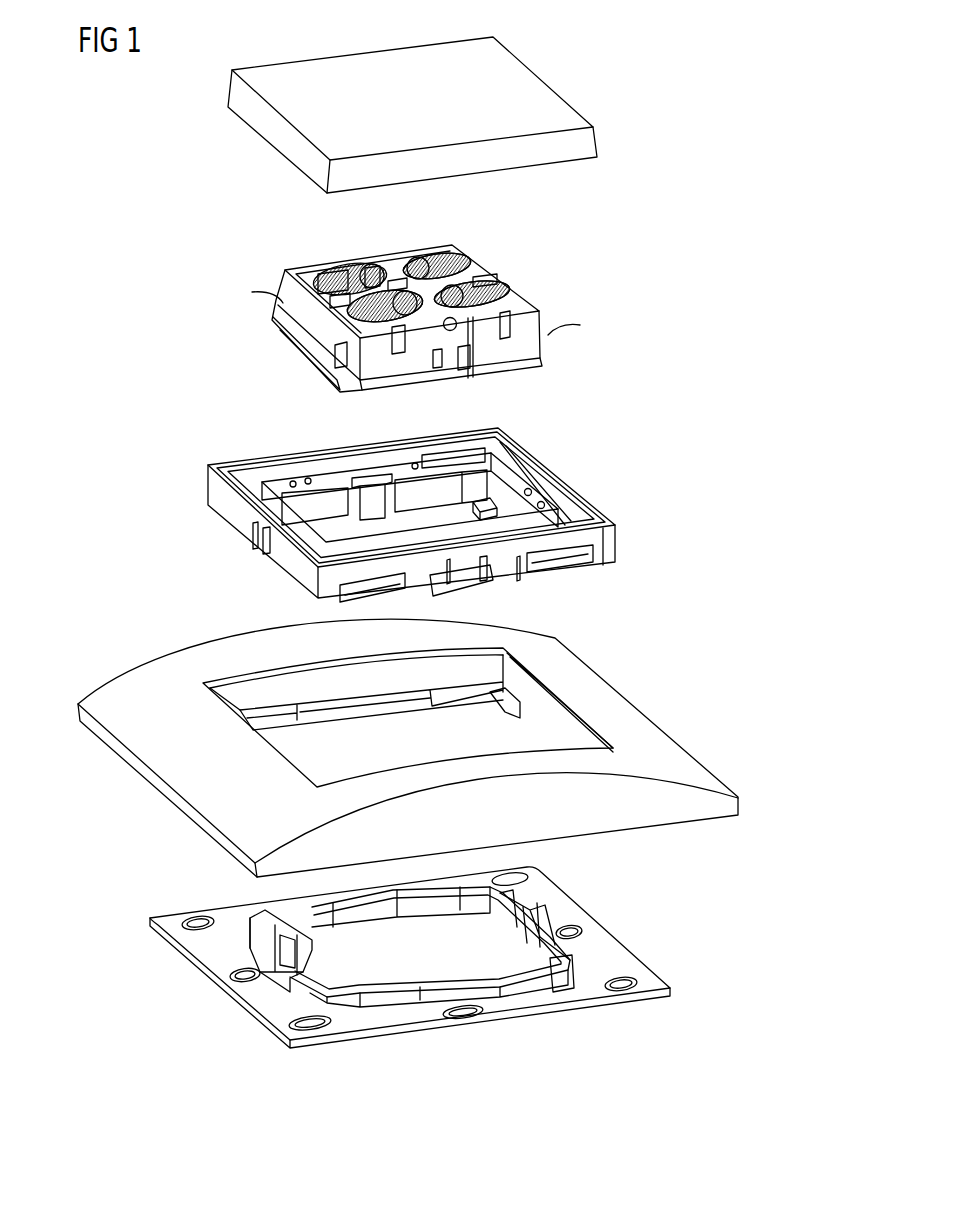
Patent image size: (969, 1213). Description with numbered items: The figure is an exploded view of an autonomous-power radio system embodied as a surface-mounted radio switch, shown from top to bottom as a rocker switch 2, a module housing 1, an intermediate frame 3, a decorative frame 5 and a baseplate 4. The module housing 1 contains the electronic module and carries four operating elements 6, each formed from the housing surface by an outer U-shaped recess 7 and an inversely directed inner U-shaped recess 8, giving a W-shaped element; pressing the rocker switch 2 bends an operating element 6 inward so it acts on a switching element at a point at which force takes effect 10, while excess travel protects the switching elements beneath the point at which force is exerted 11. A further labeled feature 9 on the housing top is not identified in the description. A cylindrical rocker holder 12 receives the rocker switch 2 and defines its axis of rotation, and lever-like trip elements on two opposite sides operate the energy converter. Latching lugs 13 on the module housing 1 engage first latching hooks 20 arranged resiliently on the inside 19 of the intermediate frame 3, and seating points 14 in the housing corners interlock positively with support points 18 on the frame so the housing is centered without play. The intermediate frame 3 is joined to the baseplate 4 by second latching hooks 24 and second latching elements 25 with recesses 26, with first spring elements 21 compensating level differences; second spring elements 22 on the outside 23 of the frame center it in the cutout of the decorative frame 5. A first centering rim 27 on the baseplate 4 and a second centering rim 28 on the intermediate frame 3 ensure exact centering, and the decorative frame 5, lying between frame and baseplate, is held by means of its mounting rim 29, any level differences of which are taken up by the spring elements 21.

The module housing 1 is at (415, 314).
The rocker switch 2 is at (545, 88).
The intermediate frame 3 is at (432, 516).
The baseplate 4 is at (410, 957).
The decorative frame 5 is at (408, 748).
The operating element 6 is at (363, 262).
The outer U-shaped recess 7 is at (440, 253).
The inner U-shaped recess 8 is at (460, 265).
The contact opening 9 is at (500, 288).
The point at which force takes effect 10 is at (340, 273).
The point at which force is exerted 11 is at (373, 272).
The rocker holder 12 is at (457, 330).
The latching lug 13 is at (465, 370).
The seating points 14 is at (340, 387).
The support points 18 is at (463, 500).
The inside of the intermediate frame 19 is at (510, 513).
The first latching hook 20 is at (380, 476).
The first spring elements 21 is at (337, 603).
The second spring elements 22 is at (483, 590).
The outside of the intermediate frame 23 is at (287, 565).
The second latching hook 24 is at (313, 947).
The second latching element 25 is at (533, 498).
The recesses 26 is at (547, 508).
The first centering rim 27 is at (565, 970).
The second centering rim 28 is at (327, 513).
The mounting rim 29 is at (500, 698).